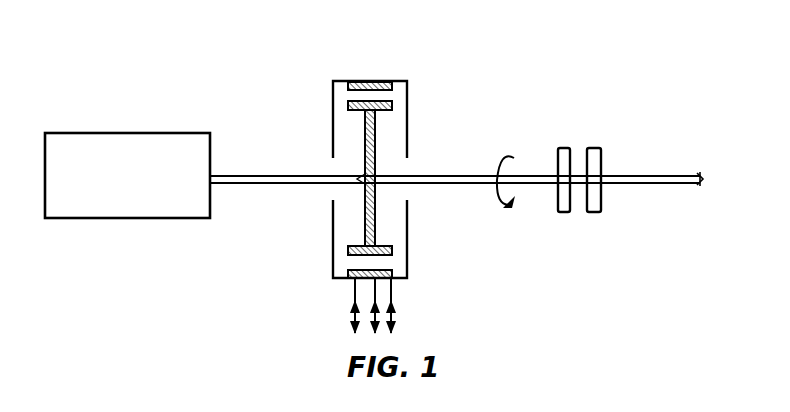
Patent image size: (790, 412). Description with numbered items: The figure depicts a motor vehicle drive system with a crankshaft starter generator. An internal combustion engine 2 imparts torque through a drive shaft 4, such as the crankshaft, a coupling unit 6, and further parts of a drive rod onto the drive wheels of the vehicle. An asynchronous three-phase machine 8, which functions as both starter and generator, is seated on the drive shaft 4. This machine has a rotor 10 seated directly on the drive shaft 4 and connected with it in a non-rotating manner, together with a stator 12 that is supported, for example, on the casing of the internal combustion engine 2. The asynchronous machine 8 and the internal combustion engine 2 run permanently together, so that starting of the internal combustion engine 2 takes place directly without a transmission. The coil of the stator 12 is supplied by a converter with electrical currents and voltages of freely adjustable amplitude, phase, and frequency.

The internal combustion engine 2 is at (138, 147).
The drive shaft 4 is at (460, 175).
The coupling unit 6 is at (565, 147).
The asynchronous three-phase machine 8 is at (394, 56).
The rotor 10 is at (375, 225).
The stator 12 is at (392, 272).